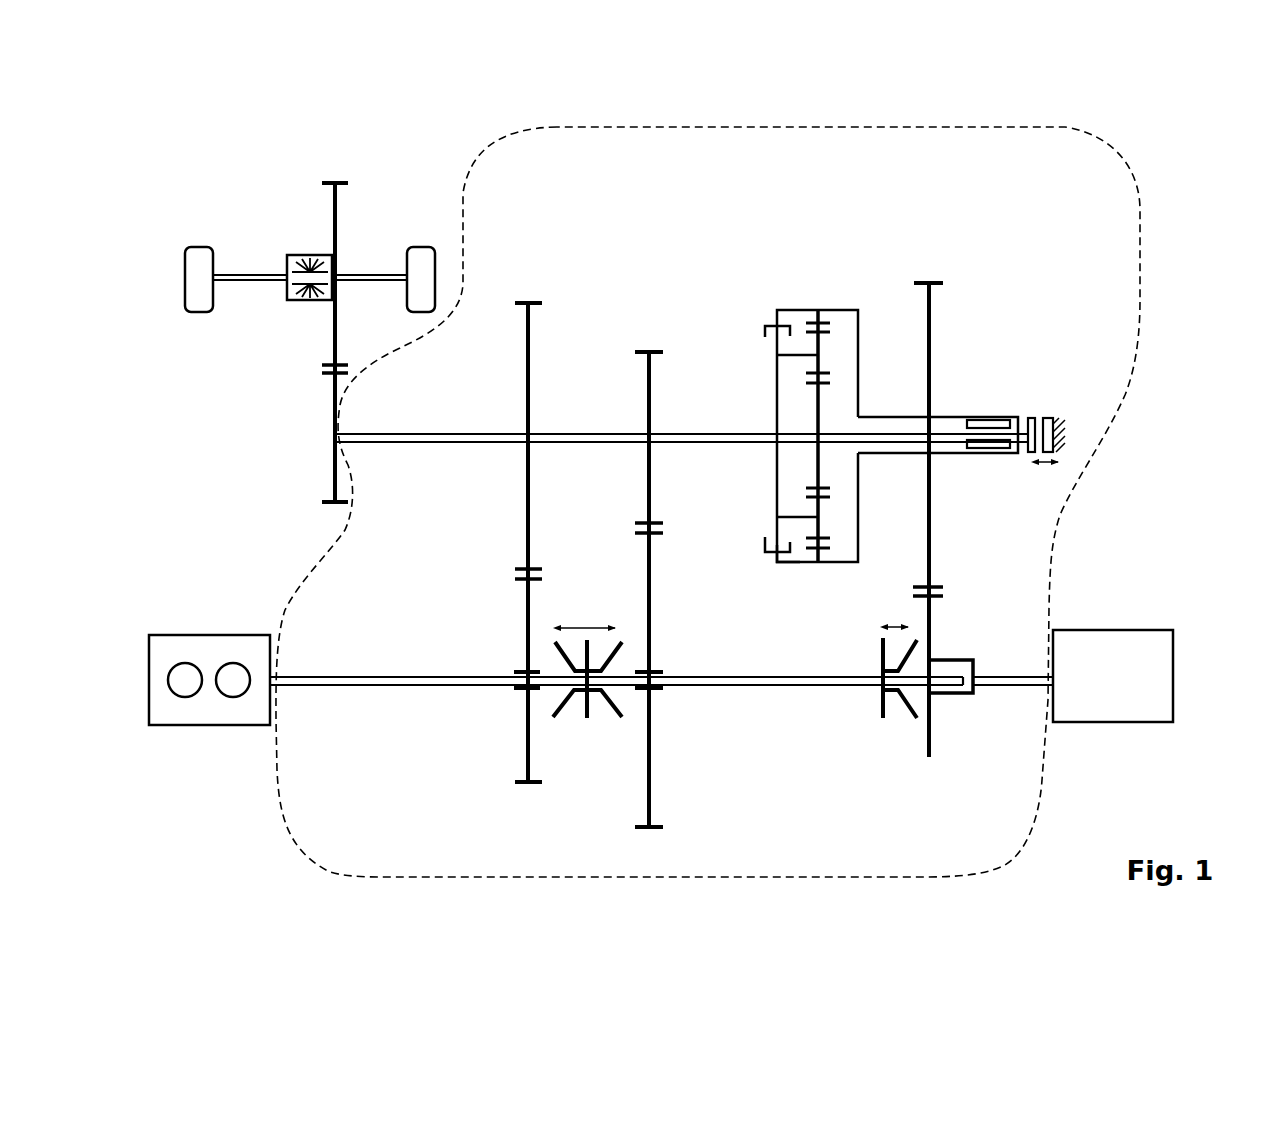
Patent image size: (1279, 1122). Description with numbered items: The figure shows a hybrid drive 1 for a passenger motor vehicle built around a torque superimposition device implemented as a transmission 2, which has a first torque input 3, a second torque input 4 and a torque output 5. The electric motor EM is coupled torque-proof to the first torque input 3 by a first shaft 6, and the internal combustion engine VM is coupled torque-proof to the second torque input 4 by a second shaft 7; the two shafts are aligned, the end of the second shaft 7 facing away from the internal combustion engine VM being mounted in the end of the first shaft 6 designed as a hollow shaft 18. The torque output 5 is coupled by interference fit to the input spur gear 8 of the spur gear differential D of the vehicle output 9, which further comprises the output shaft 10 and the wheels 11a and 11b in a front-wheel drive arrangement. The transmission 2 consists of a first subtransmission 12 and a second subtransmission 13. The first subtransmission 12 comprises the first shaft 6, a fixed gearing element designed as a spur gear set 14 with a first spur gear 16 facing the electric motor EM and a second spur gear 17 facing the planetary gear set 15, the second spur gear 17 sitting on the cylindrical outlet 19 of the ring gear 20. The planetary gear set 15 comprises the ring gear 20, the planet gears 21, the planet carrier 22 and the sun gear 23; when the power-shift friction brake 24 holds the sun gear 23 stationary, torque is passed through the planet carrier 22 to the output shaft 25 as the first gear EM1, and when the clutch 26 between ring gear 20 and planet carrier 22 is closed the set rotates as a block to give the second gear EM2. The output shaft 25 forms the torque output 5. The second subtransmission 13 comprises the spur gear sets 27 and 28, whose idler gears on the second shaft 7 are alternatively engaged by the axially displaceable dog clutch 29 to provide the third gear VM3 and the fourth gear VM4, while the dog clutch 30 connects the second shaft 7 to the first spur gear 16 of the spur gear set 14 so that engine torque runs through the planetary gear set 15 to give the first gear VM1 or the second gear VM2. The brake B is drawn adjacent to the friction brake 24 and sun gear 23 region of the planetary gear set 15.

The hybrid drive 1 is at (508, 580).
The transmission 2 is at (620, 535).
The first torque input 3 is at (1040, 695).
The second torque input 4 is at (278, 696).
The torque output 5 is at (340, 428).
The first shaft 6 is at (1018, 673).
The second shaft 7 is at (388, 675).
The input spur gear 8 is at (320, 480).
The output 9 is at (316, 300).
The output shaft 10 is at (368, 275).
The wheel 11a is at (200, 245).
The wheel 11b is at (418, 245).
The first subtransmission 12 is at (996, 282).
The second subtransmission 13 is at (498, 745).
The spur gear set 14 is at (902, 592).
The planetary gear set 15 is at (808, 438).
The first spur gear 16 is at (938, 630).
The second spur gear 17 is at (934, 473).
The hollow shaft 18 is at (943, 706).
The cylindrical outlet 19 is at (872, 462).
The ring gear 20 is at (792, 570).
The planet gears 21 is at (824, 353).
The planet carrier 22 is at (770, 388).
The sun gear 23 is at (824, 403).
The power-shift friction brake 24 is at (1075, 436).
The output shaft 25 is at (578, 430).
The clutch 26 is at (758, 333).
The spur gear set 27 is at (518, 466).
The spur gear set 28 is at (638, 466).
The dog clutch 29 is at (587, 742).
The dog clutch 30 is at (872, 698).
The spur gear differential D is at (307, 255).
The brake B is at (1045, 415).
The internal combustion engine VM is at (210, 735).
The electric motor EM is at (1118, 730).
The first gear EM1 is at (817, 265).
The second gear EM2 is at (817, 293).
The first gear VM1 is at (928, 778).
The second gear VM2 is at (928, 808).
The third gear VM3 is at (527, 810).
The fourth gear VM4 is at (648, 853).